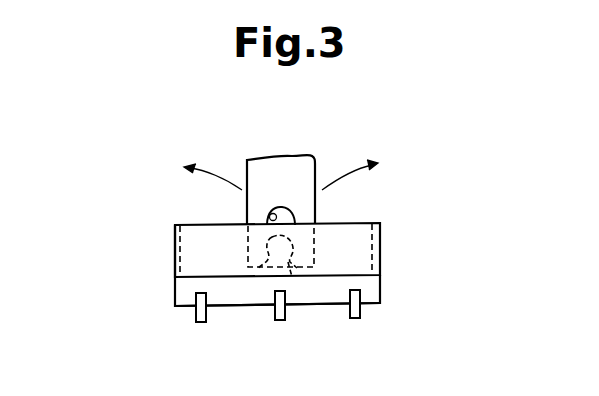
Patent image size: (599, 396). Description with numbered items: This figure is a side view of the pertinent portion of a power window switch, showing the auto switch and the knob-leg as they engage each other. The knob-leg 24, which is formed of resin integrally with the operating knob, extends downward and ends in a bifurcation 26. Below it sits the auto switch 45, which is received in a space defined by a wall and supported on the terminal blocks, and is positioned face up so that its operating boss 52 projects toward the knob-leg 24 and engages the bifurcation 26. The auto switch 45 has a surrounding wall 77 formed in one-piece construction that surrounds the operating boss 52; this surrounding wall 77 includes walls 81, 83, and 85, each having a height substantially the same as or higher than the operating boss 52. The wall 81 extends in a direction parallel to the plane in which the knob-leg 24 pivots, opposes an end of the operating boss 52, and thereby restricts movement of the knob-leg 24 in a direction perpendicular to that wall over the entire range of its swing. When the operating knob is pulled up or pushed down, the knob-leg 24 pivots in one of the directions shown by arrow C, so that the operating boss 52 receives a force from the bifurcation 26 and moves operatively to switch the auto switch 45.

The knob-leg 24 is at (279, 171).
The bifurcation 26 is at (268, 214).
The auto switch 45 is at (382, 287).
The operating boss 52 is at (278, 257).
The surrounding wall 77 is at (372, 222).
The wall 81 is at (337, 260).
The wall 83 is at (380, 237).
The wall 85 is at (175, 248).
The arrow C is at (293, 165).